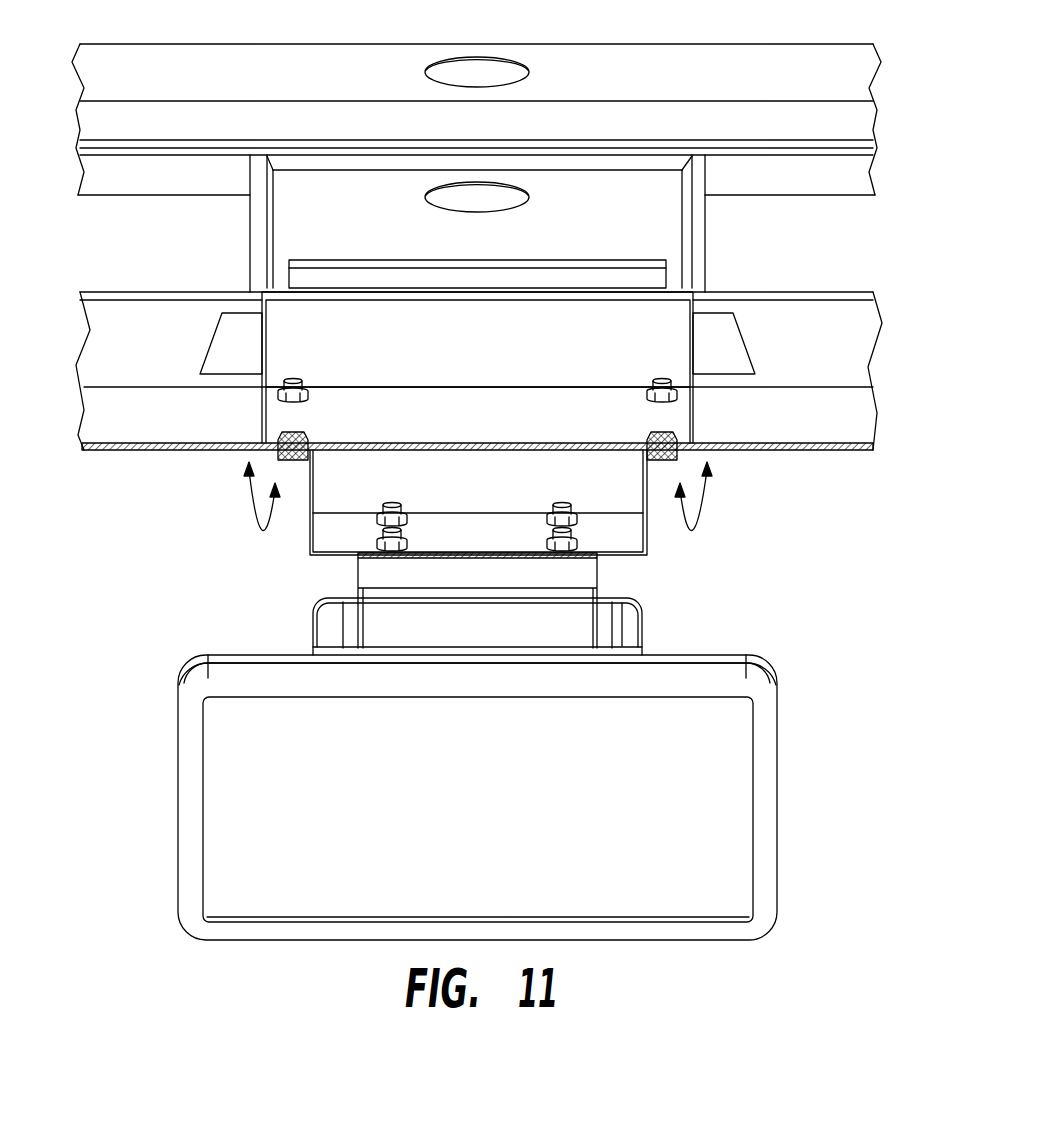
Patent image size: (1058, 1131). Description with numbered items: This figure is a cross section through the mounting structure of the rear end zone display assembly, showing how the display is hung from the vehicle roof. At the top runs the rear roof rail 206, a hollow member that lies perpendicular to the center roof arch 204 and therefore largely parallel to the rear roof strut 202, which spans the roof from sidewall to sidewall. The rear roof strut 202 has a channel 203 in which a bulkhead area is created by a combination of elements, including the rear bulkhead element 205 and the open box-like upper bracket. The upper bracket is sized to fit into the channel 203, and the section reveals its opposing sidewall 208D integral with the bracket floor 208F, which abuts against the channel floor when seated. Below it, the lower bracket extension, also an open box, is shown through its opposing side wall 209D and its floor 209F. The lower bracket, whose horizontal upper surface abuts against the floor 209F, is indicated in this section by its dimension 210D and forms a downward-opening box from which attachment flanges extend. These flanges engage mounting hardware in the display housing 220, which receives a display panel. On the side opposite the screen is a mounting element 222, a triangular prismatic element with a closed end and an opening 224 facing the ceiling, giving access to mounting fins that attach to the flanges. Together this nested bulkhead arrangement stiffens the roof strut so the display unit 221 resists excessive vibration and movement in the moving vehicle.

The rear roof rail 206 is at (655, 68).
The center roof arch 204 is at (647, 219).
The rear bulkhead element 205 is at (335, 262).
The rear roof strut 202 is at (852, 342).
The channel 203 is at (852, 418).
The opposing sidewall 208D is at (458, 357).
The bracket floor 208F is at (458, 421).
The opposing side wall 209D is at (458, 490).
The floor 209F is at (458, 543).
The spacer dimension 210D is at (458, 585).
The display unit 221 is at (577, 536).
The opening 224 is at (635, 618).
The mounting element 222 is at (643, 630).
The display housing 220 is at (777, 770).